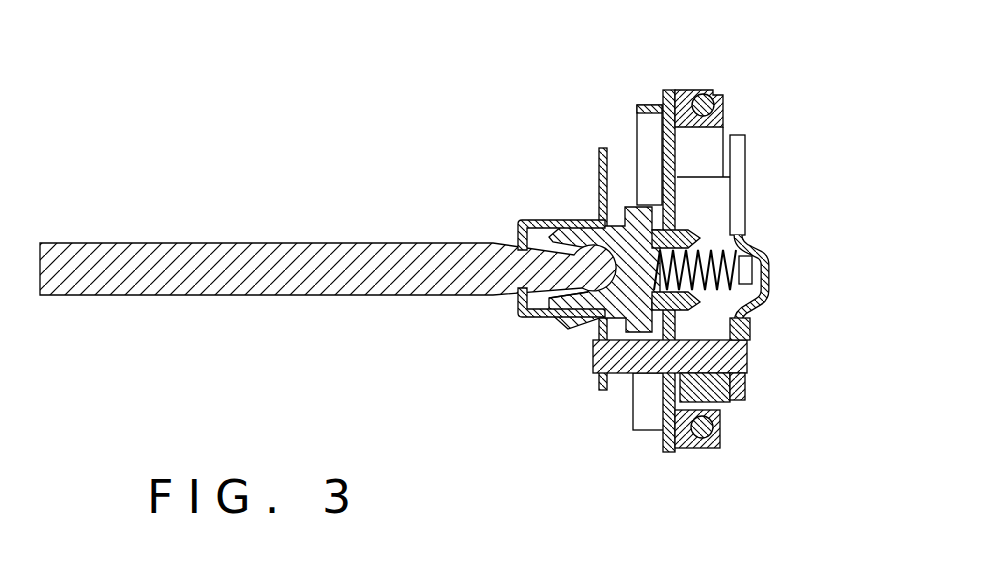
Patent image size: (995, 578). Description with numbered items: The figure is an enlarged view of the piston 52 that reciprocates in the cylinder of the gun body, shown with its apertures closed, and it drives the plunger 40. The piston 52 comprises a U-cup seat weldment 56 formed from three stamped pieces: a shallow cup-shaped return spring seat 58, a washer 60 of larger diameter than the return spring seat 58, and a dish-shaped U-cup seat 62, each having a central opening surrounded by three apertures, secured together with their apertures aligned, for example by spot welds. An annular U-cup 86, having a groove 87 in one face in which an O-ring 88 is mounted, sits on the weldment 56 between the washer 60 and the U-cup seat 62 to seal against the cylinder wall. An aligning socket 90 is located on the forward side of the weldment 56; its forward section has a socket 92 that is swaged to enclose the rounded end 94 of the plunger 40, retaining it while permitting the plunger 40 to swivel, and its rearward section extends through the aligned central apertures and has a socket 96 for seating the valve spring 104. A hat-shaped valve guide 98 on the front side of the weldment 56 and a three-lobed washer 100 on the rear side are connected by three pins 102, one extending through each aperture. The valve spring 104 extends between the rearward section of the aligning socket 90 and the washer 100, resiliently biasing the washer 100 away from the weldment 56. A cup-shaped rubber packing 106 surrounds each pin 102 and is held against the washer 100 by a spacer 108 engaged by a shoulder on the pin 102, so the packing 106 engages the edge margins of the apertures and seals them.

The plunger 40 is at (296, 257).
The piston 52 is at (752, 101).
The U-cup seat weldment 56 is at (647, 443).
The return spring seat 58 is at (635, 410).
The washer 60 is at (665, 446).
The U-cup seat 62 is at (722, 430).
The U-cup 86 is at (677, 90).
The groove 87 is at (722, 128).
The O-ring 88 is at (715, 95).
The aligning socket 90 is at (600, 215).
The socket 92 is at (557, 298).
The rounded end 94 is at (560, 265).
The socket 96 is at (745, 328).
The valve guide 98 is at (559, 320).
The three-lobed washer 100 is at (762, 310).
The pin 102 is at (752, 358).
The valve spring 104 is at (712, 248).
The rubber packing 106 is at (737, 400).
The spacer 108 is at (735, 393).